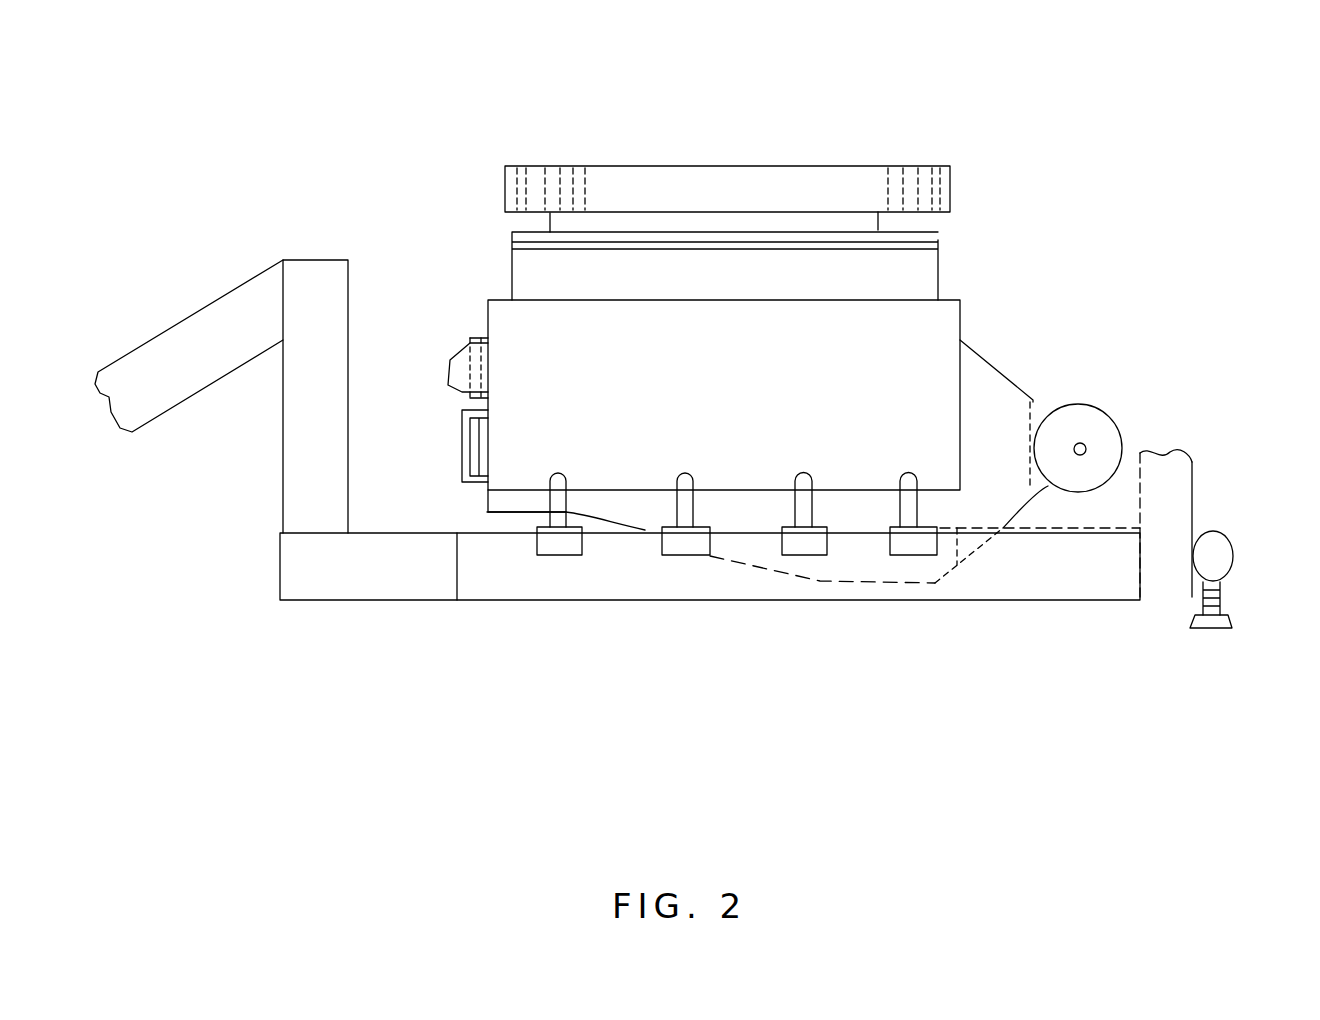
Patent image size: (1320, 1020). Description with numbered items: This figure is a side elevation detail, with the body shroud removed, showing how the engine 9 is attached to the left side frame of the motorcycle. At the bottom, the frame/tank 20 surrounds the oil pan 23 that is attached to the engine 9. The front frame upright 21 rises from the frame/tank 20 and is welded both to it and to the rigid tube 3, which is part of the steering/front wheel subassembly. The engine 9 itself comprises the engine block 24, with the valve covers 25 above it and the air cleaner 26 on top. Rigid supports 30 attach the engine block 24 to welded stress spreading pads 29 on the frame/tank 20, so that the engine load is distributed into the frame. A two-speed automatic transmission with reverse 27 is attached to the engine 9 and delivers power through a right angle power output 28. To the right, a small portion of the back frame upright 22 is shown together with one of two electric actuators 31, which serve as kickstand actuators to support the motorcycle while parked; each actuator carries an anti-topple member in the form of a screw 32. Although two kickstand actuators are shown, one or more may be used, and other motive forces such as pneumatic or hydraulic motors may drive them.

The engine 9 is at (908, 115).
The rigid tube 3 is at (167, 348).
The front frame upright 21 is at (313, 277).
The frame/tank 20 is at (403, 582).
The engine block 24 is at (910, 342).
The valve covers 25 is at (912, 268).
The air cleaner 26 is at (958, 183).
The two-speed automatic transmission with reverse 27 is at (995, 398).
The right angle power output 28 is at (1117, 408).
The back frame upright 22 is at (1180, 512).
The electric actuator 31 is at (1243, 556).
The screw 32 is at (1230, 603).
The rigid supports 30 is at (572, 483).
The stress spreading pads 29 is at (548, 558).
The oil pan 23 is at (642, 508).